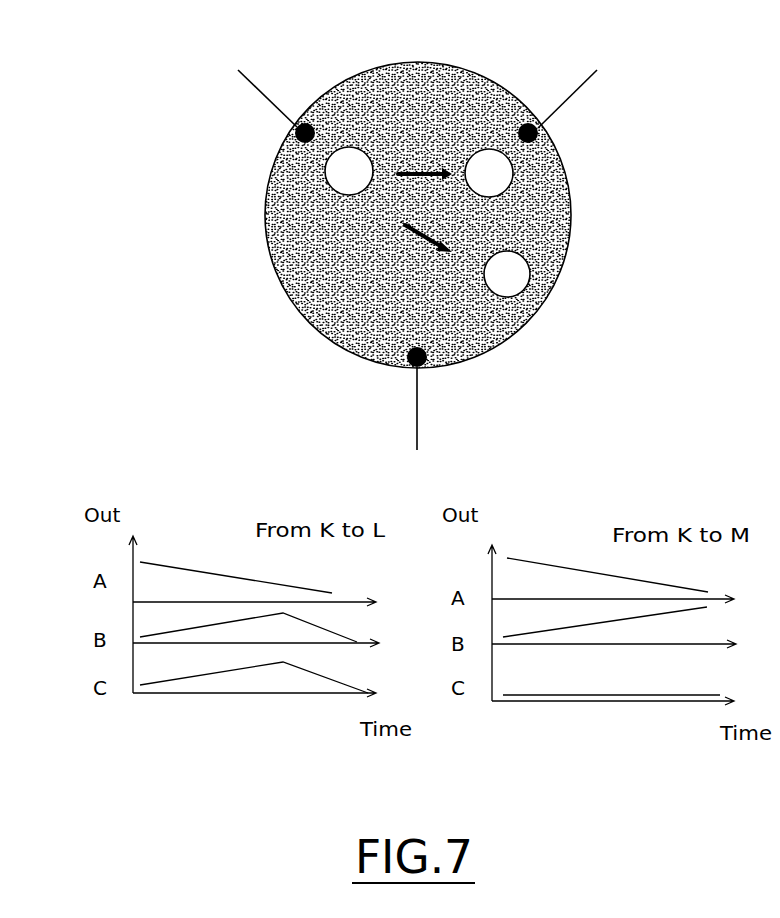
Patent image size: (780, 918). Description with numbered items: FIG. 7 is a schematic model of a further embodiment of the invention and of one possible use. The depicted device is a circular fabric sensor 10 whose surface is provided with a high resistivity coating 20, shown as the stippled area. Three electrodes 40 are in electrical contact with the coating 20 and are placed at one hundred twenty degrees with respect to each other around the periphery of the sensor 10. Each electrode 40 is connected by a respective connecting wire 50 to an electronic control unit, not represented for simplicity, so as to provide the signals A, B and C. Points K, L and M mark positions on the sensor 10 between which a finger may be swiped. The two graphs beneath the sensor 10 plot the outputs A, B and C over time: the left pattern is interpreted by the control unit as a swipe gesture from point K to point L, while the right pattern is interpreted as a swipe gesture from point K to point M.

The fabric sensor 10 is at (405, 245).
The high resistivity coating 20 is at (335, 115).
The electrode 40 is at (290, 140).
The connecting wire 50 is at (258, 84).